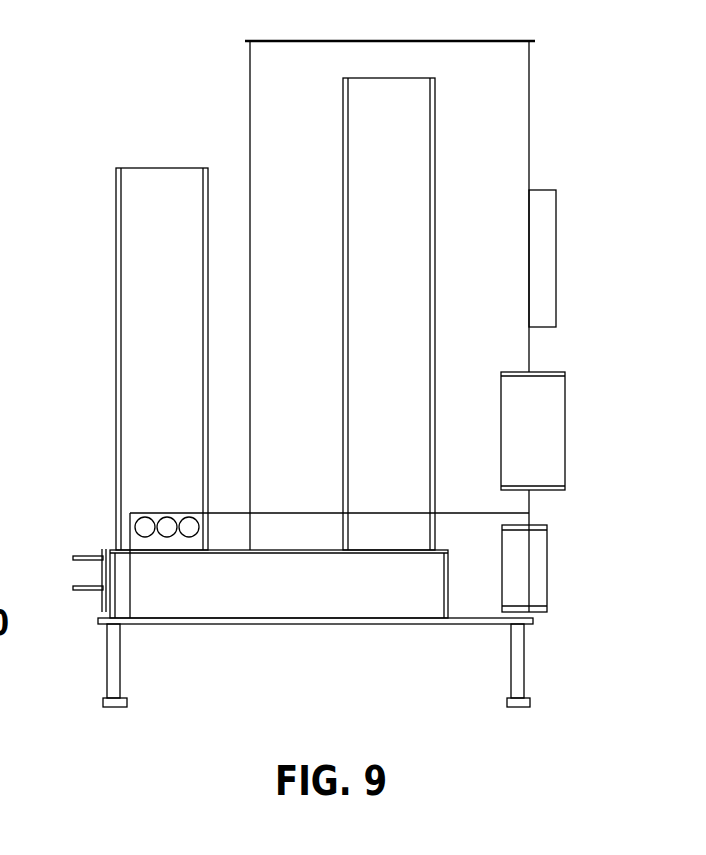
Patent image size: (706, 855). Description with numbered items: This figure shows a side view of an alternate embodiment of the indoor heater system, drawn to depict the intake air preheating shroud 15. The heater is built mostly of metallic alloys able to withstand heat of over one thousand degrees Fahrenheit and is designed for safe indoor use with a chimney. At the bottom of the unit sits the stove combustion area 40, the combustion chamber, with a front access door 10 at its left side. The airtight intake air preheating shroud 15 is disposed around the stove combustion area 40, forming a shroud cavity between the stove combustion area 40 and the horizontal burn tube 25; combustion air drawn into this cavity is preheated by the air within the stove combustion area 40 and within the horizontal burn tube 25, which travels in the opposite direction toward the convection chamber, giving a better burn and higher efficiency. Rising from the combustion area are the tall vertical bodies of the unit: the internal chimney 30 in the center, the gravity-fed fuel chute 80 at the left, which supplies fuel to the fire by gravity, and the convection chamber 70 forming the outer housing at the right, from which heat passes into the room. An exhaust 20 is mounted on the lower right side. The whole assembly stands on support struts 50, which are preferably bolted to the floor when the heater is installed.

The front access door 10 is at (103, 578).
The intake air preheating shroud 15 is at (235, 528).
The exhaust 20 is at (543, 580).
The horizontal burn tube 25 is at (285, 603).
The internal chimney 30 is at (370, 152).
The stove combustion area 40 is at (173, 593).
The support struts 50 is at (518, 675).
The convection chamber 70 is at (470, 127).
The gravity-fed fuel chute 80 is at (145, 385).